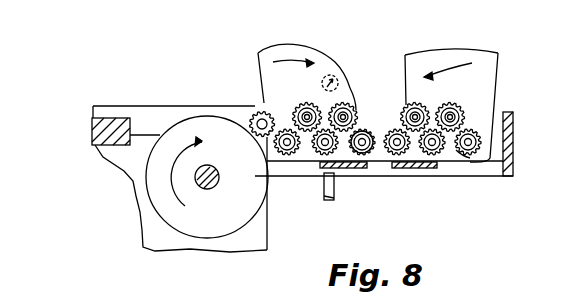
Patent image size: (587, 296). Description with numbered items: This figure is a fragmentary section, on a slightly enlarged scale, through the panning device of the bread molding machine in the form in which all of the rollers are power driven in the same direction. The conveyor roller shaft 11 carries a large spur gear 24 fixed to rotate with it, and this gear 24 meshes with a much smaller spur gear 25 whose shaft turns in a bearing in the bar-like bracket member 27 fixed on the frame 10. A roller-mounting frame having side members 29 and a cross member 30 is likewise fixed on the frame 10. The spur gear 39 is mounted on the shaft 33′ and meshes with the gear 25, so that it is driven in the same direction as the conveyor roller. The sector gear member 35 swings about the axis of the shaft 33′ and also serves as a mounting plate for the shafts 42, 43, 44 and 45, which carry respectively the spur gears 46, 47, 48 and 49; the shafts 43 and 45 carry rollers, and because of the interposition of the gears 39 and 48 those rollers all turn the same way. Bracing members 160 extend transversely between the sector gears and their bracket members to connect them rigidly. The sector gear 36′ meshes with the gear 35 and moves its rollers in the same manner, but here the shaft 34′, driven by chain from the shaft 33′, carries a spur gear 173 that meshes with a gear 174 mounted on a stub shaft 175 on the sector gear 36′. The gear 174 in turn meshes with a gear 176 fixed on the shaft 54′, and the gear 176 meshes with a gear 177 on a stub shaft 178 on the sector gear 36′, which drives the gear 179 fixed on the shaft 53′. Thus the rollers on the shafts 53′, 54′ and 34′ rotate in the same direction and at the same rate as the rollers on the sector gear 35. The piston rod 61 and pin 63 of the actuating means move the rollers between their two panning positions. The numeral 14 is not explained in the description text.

The frame 10 is at (150, 227).
The shaft 11 is at (205, 188).
The bearing block 14 is at (97, 128).
The spur gear 24 is at (160, 178).
The spur gear 25 is at (250, 116).
The bar-like bracket member 27 is at (119, 112).
The side members 29 is at (500, 178).
The cross member 30 is at (513, 165).
The shaft 33′ is at (270, 177).
The shaft 34′ is at (472, 143).
The sector gear member 35 is at (265, 52).
The sector gear 36′ is at (490, 62).
The spur gear 39 is at (261, 105).
The shaft 42 is at (309, 102).
The shaft 43 is at (300, 152).
The shaft 44 is at (340, 103).
The shaft 45 is at (352, 112).
The spur gear 46 is at (292, 103).
The spur gear 47 is at (343, 160).
The spur gear 48 is at (367, 108).
The spur gear 49 is at (370, 160).
The shaft 53′ is at (398, 160).
The shaft 54′ is at (428, 169).
The piston rod 61 is at (332, 202).
The pin 63 is at (340, 72).
The bracing members 160 is at (362, 168).
The spur gear 173 is at (480, 143).
The gear 174 is at (466, 118).
The stub shaft 175 is at (458, 106).
The gear 176 is at (462, 165).
The gear 177 is at (420, 103).
The stub shaft 178 is at (408, 100).
The gear 179 is at (427, 160).